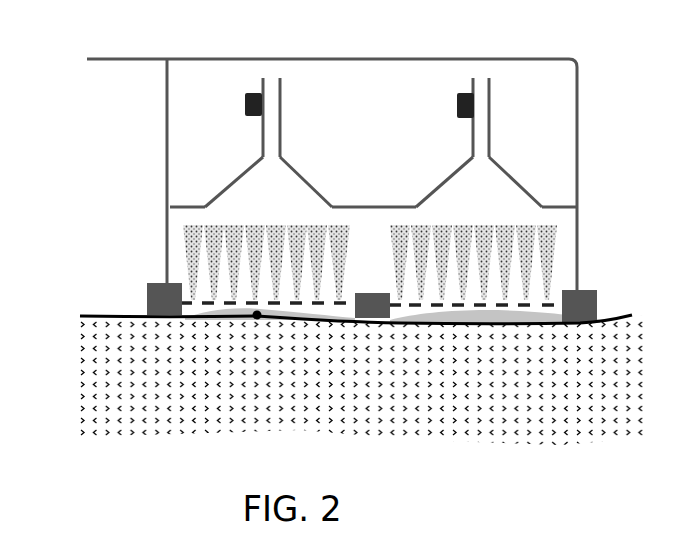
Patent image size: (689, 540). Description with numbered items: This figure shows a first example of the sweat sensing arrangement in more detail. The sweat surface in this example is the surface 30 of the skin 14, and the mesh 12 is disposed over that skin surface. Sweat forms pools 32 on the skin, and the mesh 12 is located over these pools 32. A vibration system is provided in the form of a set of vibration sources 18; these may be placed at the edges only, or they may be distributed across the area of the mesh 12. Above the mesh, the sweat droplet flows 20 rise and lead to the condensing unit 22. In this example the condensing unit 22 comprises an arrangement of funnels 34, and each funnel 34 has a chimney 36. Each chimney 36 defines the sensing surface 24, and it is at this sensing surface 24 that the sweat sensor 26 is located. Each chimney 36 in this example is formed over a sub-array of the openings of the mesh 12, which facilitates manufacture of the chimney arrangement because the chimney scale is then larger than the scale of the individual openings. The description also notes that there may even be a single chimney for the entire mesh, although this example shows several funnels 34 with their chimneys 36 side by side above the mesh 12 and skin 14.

The mesh 12 is at (550, 308).
The skin 14 is at (487, 393).
The vibration sources 18 is at (147, 300).
The sweat droplet flows 20 is at (183, 250).
The condensing unit 22 is at (368, 207).
The sensing surface 24 is at (262, 110).
The sweat sensor 26 is at (245, 104).
The surface of the skin 30 is at (617, 316).
The pools 32 is at (257, 316).
The funnel 34 is at (263, 157).
The chimney 36 is at (281, 128).